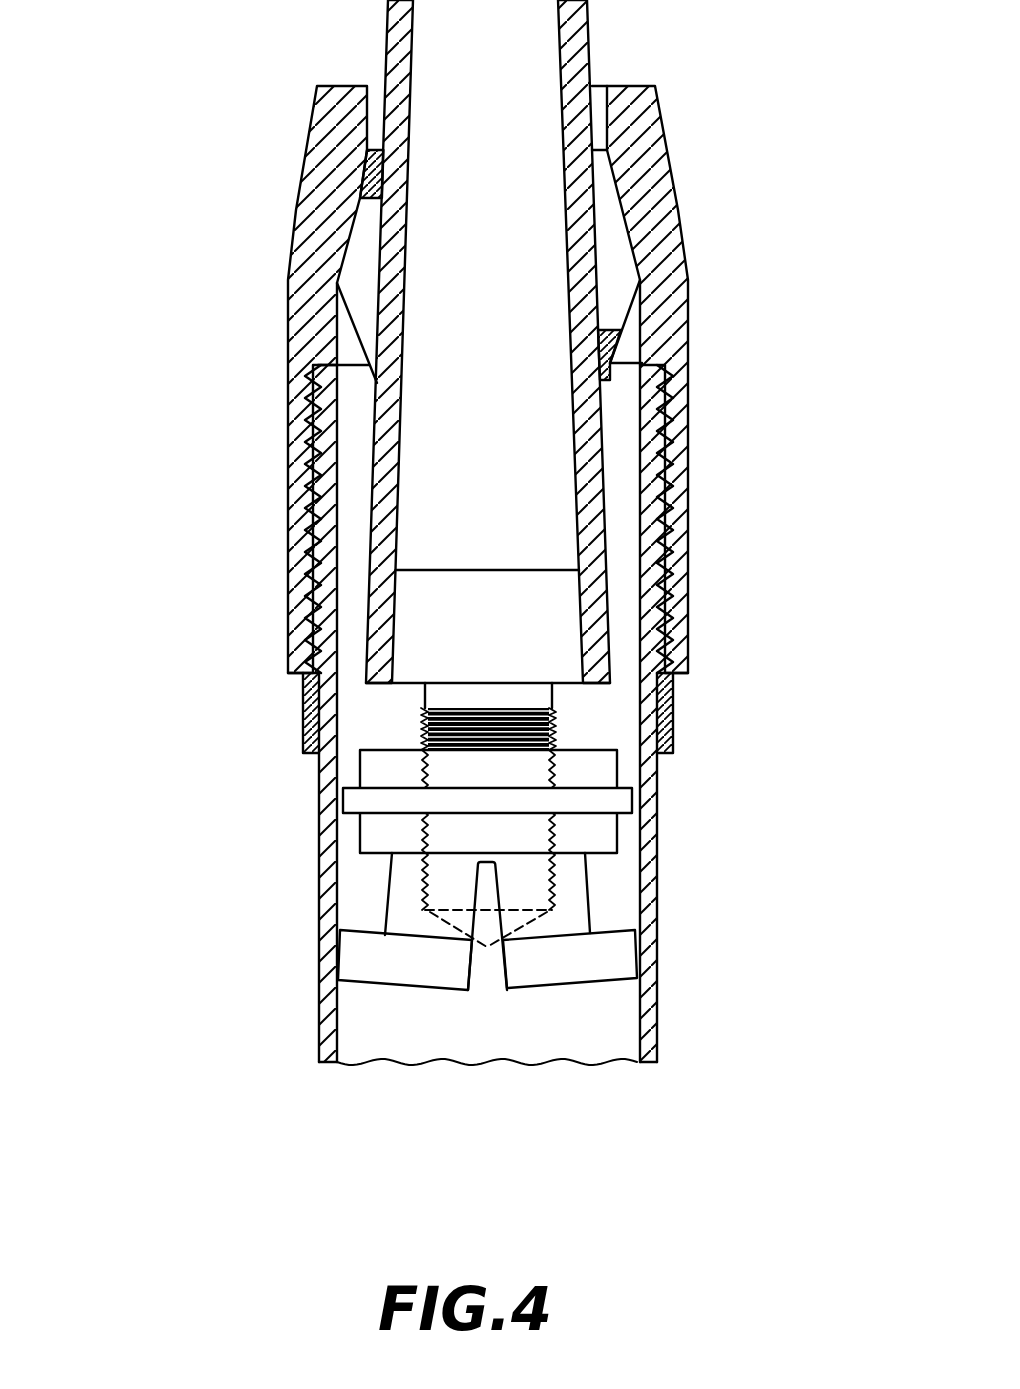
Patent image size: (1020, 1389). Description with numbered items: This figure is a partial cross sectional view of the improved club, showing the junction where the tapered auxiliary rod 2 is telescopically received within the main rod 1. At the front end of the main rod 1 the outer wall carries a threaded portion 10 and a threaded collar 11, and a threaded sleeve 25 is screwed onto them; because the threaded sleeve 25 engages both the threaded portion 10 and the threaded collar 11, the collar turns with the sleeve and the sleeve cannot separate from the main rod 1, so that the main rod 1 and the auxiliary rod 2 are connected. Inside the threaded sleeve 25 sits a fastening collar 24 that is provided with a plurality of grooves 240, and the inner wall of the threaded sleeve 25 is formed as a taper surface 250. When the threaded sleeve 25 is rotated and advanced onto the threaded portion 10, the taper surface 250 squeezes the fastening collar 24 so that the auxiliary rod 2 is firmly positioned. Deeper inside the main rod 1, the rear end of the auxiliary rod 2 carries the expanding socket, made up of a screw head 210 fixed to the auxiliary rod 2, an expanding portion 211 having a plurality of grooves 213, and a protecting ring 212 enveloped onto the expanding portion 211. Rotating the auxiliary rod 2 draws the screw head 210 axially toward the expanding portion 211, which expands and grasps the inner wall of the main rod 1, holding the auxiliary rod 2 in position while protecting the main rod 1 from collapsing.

The main rod 1 is at (317, 904).
The auxiliary rod 2 is at (598, 233).
The threaded portion 10 is at (668, 446).
The threaded collar 11 is at (303, 705).
The fastening collar 24 is at (365, 162).
The threaded sleeve 25 is at (688, 316).
The screw head 210 is at (530, 693).
The expanding portion 211 is at (605, 846).
The protecting ring 212 is at (615, 799).
The grooves 213 is at (482, 973).
The grooves 240 is at (360, 272).
The taper surface 250 is at (352, 208).